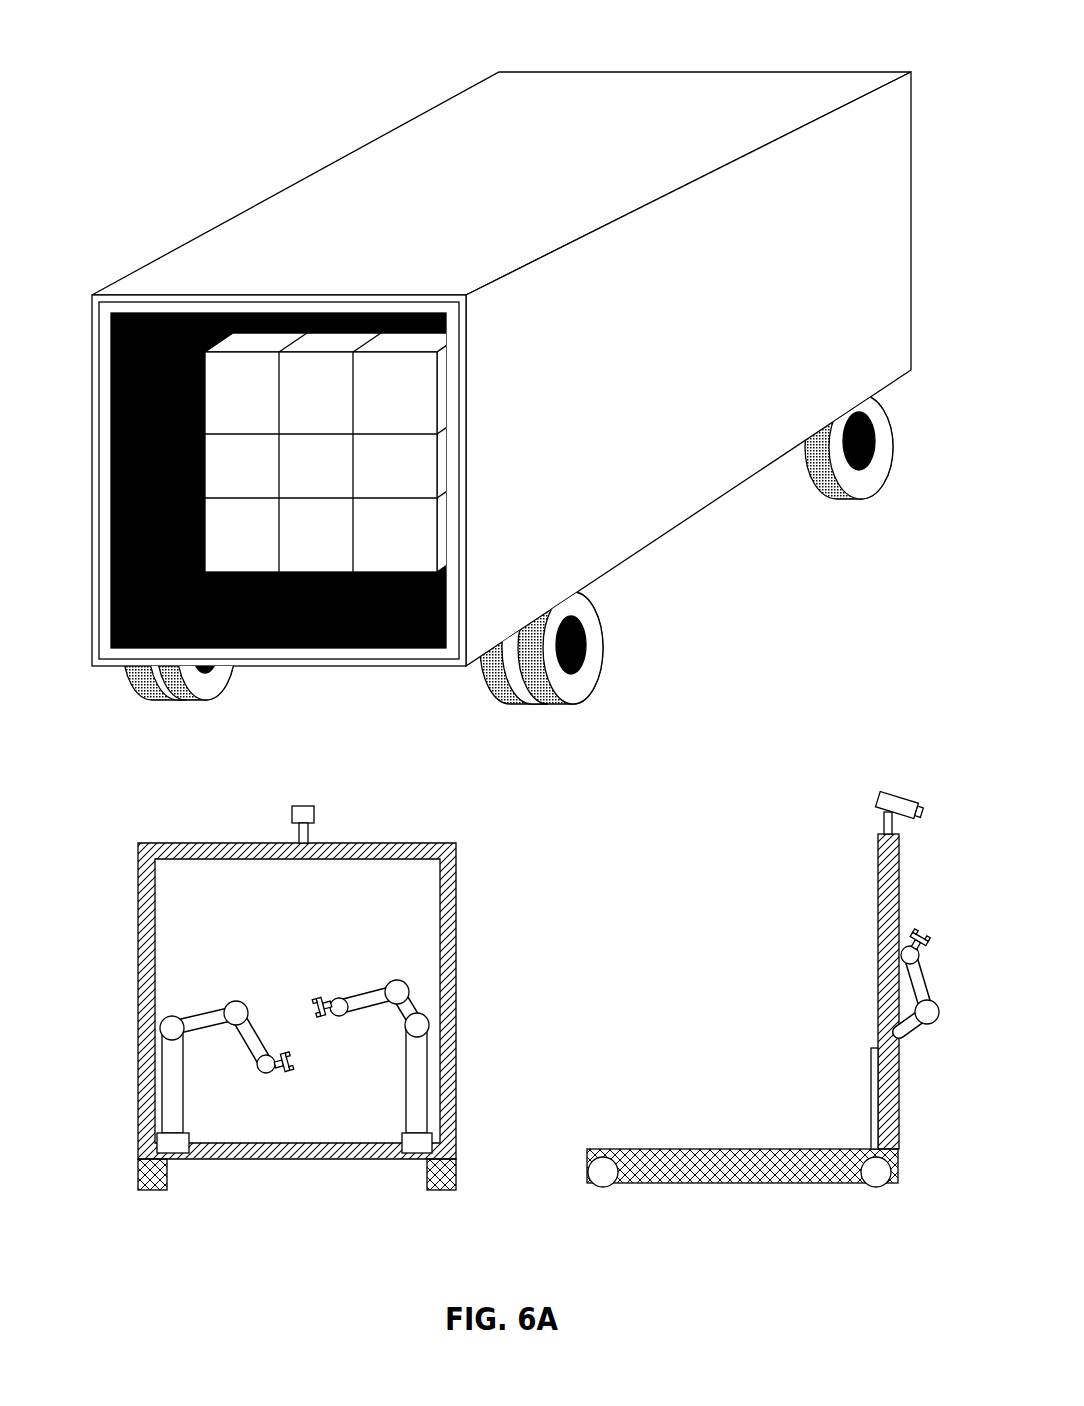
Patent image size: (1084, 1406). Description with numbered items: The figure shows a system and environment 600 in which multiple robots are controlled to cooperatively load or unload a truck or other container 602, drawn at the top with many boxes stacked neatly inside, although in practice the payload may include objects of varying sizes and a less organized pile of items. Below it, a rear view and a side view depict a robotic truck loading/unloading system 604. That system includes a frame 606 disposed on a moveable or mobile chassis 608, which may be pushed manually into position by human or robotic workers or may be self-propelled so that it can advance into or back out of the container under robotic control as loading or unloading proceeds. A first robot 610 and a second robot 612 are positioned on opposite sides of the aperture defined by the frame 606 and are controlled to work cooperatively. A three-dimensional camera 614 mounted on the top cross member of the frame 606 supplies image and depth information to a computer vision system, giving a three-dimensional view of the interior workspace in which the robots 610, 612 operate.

The system and environment 600 is at (146, 51).
The truck or other container 602 is at (358, 167).
The robotic truck loading/unloading system 604 is at (129, 815).
The frame 606 is at (457, 932).
The chassis 608 is at (457, 1172).
The first robot 610 is at (184, 1108).
The second robot 612 is at (406, 1106).
The 3D camera 614 is at (317, 815).